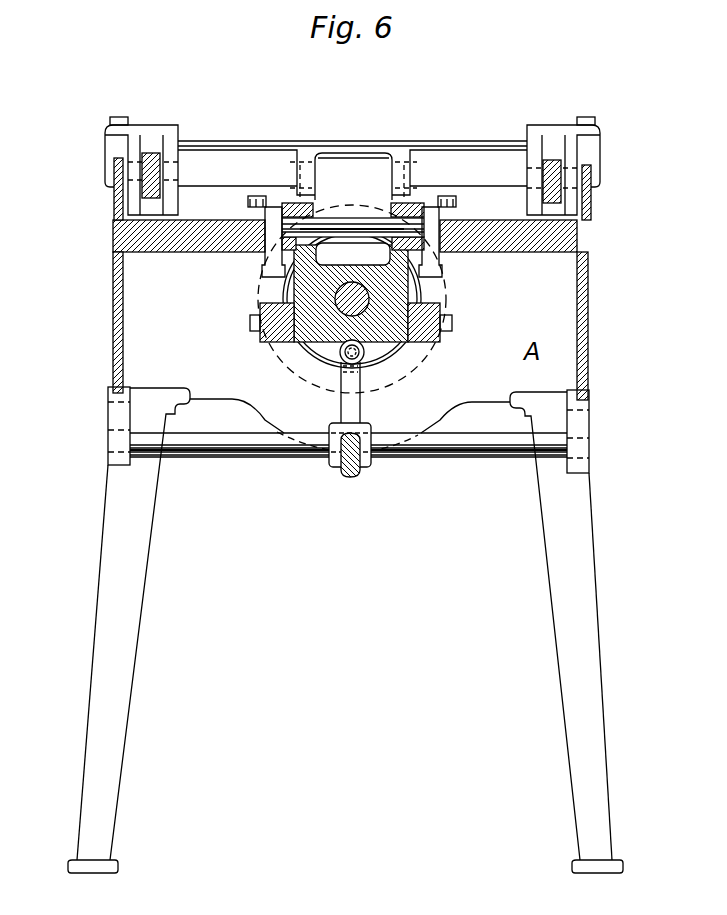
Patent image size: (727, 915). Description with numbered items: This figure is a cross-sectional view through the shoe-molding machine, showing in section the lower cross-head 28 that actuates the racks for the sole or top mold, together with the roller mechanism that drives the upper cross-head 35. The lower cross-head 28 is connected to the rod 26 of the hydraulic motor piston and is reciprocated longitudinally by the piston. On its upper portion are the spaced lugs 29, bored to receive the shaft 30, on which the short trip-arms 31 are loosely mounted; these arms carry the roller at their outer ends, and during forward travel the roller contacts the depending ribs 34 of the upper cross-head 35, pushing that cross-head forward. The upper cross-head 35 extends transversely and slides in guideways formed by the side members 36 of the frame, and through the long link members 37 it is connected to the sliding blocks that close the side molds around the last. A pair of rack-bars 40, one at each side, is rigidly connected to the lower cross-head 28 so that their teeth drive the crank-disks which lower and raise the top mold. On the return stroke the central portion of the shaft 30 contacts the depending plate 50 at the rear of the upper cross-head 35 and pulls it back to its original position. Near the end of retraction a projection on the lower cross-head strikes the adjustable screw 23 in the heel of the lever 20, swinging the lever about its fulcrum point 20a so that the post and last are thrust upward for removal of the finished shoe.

The lever 20 is at (352, 478).
The fulcrum point of lever 20a is at (445, 454).
The adjustable screw 23 is at (342, 366).
The piston rod 26 is at (368, 298).
The lower cross-head 28 is at (395, 348).
The lugs 29 is at (266, 266).
The shaft 30 is at (327, 228).
The trip-arms 31 is at (283, 168).
The depending ribs 34 is at (294, 163).
The upper cross-head 35 is at (461, 146).
The side members of the frame 36 is at (120, 148).
The long link members 37 is at (143, 193).
The rack-bars 40 is at (260, 337).
The depending plate 50 is at (372, 212).